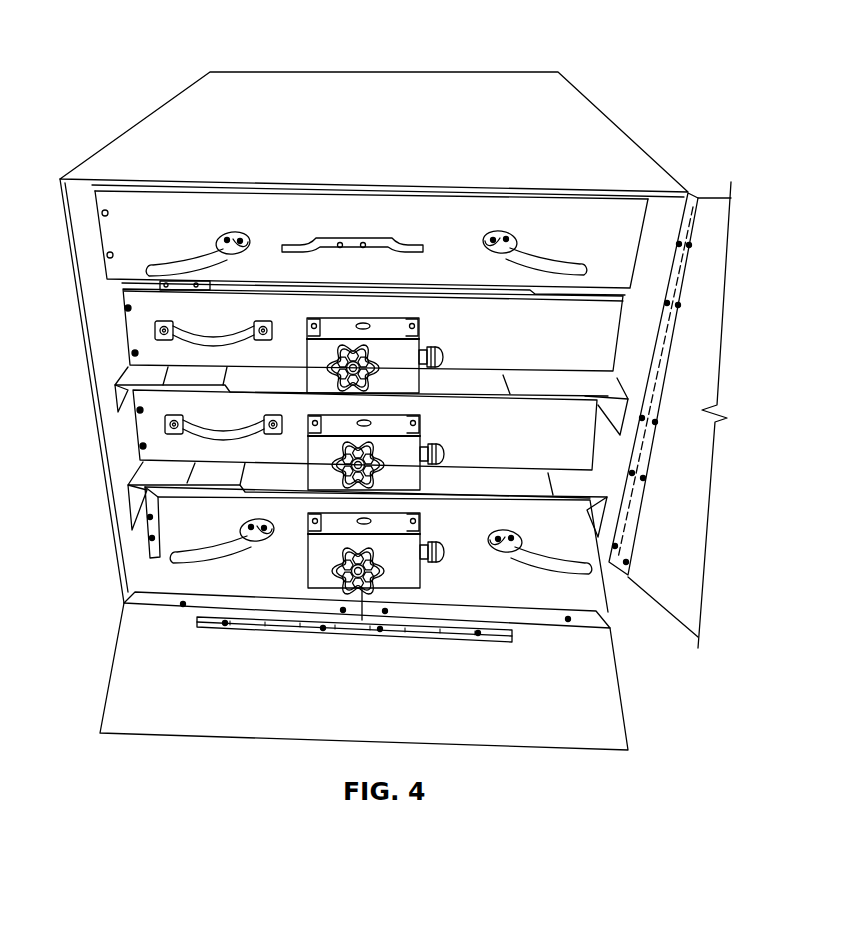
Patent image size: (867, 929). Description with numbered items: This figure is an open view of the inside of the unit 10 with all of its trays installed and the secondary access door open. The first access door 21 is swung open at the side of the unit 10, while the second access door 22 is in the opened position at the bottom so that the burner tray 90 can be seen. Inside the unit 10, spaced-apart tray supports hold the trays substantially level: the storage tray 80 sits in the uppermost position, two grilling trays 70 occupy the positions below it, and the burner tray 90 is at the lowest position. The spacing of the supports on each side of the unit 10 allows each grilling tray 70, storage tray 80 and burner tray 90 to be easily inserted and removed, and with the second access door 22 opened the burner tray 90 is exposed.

The unit 10 is at (116, 52).
The first access door 21 is at (711, 212).
The second access door 22 is at (125, 668).
The grilling tray 70 is at (135, 328).
The storage tray 80 is at (120, 236).
The burner tray 90 is at (165, 530).